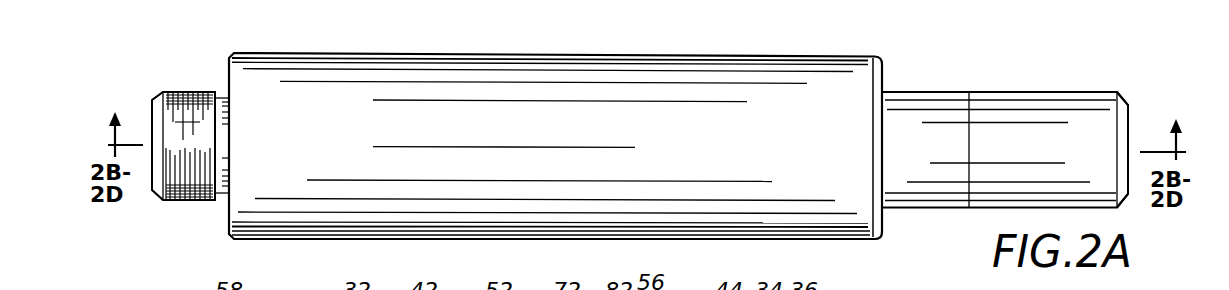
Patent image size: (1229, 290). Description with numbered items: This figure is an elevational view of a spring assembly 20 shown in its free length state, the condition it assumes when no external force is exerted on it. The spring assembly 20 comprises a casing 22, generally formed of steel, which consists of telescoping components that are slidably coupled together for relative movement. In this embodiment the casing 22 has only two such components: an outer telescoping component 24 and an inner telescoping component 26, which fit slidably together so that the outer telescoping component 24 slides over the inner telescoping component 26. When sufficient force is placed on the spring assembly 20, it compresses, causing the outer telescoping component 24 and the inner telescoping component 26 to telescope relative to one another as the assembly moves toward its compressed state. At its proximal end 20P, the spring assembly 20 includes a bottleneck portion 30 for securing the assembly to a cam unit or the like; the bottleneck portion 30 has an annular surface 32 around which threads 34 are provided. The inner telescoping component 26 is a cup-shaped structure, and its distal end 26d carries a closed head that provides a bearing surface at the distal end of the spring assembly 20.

The spring assembly 20 is at (178, 254).
The proximal end 20P is at (168, 70).
The casing 22 is at (692, 247).
The outer telescoping component 24 is at (876, 241).
The inner telescoping component 26 is at (920, 92).
The distal end 26d is at (1140, 98).
The bottleneck portion 30 is at (182, 90).
The annular surface 32 is at (162, 90).
The threads 34 is at (163, 202).